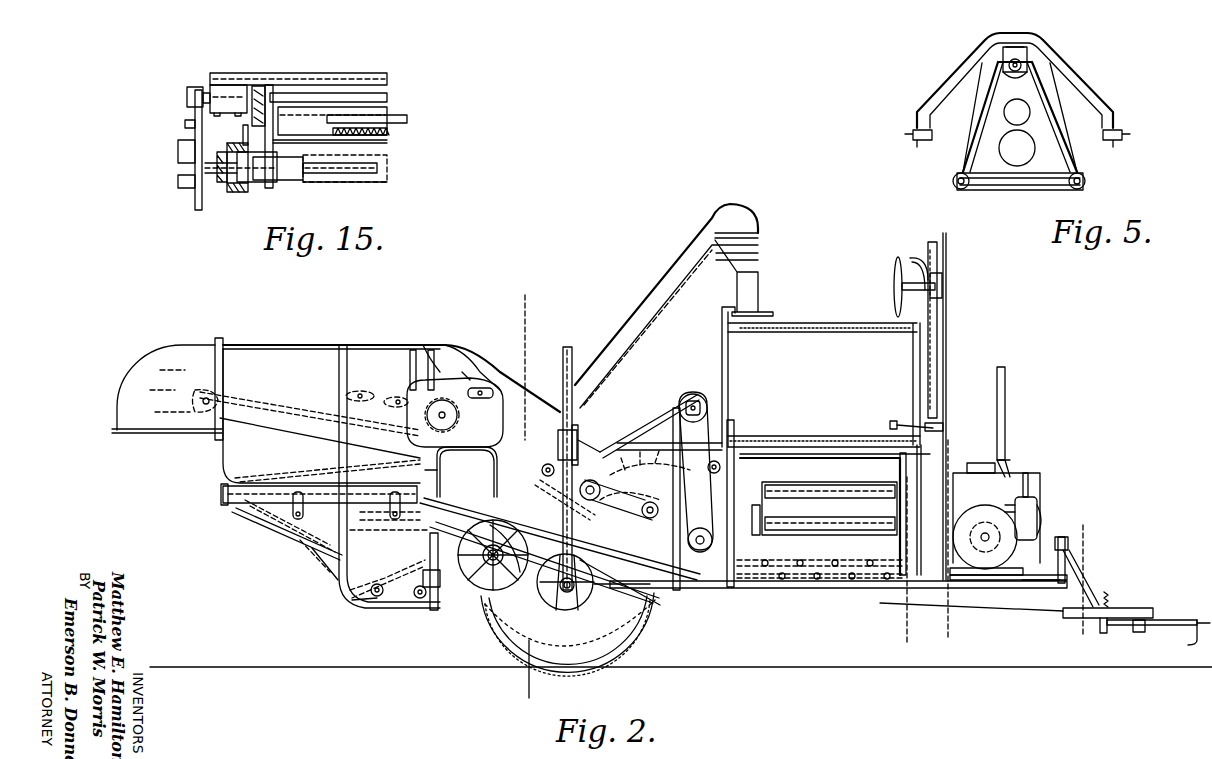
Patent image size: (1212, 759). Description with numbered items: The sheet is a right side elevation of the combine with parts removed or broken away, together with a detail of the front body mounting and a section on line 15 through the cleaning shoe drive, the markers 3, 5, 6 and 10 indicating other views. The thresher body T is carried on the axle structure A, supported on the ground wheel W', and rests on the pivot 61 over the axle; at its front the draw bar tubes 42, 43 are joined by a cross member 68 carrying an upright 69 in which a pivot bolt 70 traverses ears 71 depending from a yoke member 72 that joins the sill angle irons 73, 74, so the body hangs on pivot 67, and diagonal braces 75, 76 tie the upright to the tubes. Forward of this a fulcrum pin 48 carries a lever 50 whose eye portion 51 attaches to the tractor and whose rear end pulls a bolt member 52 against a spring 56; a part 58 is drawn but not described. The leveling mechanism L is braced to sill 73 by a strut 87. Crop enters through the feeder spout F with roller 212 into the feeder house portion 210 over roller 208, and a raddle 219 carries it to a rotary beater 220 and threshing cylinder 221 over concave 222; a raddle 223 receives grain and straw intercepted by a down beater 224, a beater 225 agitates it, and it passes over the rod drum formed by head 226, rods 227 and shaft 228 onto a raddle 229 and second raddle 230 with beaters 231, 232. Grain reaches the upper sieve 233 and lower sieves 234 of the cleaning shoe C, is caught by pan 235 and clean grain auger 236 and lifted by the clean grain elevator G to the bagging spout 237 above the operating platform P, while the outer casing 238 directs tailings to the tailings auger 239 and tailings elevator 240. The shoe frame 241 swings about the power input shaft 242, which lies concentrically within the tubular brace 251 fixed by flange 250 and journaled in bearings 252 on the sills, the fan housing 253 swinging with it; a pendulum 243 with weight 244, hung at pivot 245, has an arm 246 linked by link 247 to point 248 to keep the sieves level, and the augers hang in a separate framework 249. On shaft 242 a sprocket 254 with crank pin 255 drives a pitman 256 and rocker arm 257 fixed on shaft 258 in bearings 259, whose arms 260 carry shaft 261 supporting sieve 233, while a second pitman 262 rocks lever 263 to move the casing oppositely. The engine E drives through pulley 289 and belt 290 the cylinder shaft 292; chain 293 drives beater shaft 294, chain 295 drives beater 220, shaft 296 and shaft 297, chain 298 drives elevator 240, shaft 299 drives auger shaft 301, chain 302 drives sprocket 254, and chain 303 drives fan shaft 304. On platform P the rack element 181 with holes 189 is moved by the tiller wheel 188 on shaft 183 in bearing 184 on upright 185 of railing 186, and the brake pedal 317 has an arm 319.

In FIG. 15, the frame 241 is at (272, 98).
In FIG. 2, the frame 241 is at (223, 494).
In FIG. 15, the arms 260 is at (260, 86).
In FIG. 15, the bearings 259 is at (203, 88).
In FIG. 15, the rocker arm 257 is at (187, 110).
In FIG. 15, the second pitman 262 is at (185, 127).
In FIG. 2, the second pitman 262 is at (400, 516).
In FIG. 15, the pitman 256 is at (178, 158).
In FIG. 15, the crank pin 255 is at (178, 182).
In FIG. 15, the sprocket 254 is at (195, 198).
In FIG. 2, the sprocket 254 is at (420, 531).
In FIG. 15, the shaft 242 is at (388, 169).
In FIG. 2, the shaft 242 is at (467, 472).
In FIG. 15, the shaft 258 is at (388, 97).
In FIG. 15, the shaft 261 is at (402, 119).
In FIG. 15, the upper sieve 233 is at (360, 132).
In FIG. 2, the upper sieve 233 is at (252, 532).
In FIG. 15, the flange 250 is at (388, 141).
In FIG. 15, the tubular brace 251 is at (375, 183).
In FIG. 15, the bearings 252 is at (238, 192).
In FIG. 15, the fan housing 253 is at (226, 182).
In FIG. 2, the fan housing 253 is at (543, 604).
In FIG. 15, the angle iron 73 is at (244, 138).
In FIG. 5, the angle iron 73 is at (917, 141).
In FIG. 2, the angle iron 73 is at (1033, 581).
In FIG. 5, the yoke member 72 is at (946, 86).
In FIG. 5, the angle iron 74 is at (1114, 141).
In FIG. 5, the ears 71 is at (1004, 50).
In FIG. 5, the pivot bolt 70 is at (1009, 62).
In FIG. 2, the pivot bolt 70 is at (1070, 550).
In FIG. 5, the pivot 67 is at (1020, 64).
In FIG. 2, the pivot 67 is at (1062, 537).
In FIG. 5, the upright 69 is at (995, 133).
In FIG. 5, the diagonal brace 75 is at (1003, 124).
In FIG. 5, the diagonal brace 76 is at (1060, 148).
In FIG. 5, the cross member 68 is at (1035, 184).
In FIG. 5, the tubular draw bar element 43 is at (955, 184).
In FIG. 5, the tubular draw bar element 42 is at (1084, 180).
In FIG. 2, the second raddle 230 is at (130, 398).
In FIG. 2, the thresher body T is at (352, 342).
In FIG. 2, the raddle 229 is at (300, 400).
In FIG. 2, the beater 232 is at (362, 391).
In FIG. 2, the beater 231 is at (396, 397).
In FIG. 2, the framework 249 is at (345, 587).
In FIG. 2, the pivot 245 is at (442, 398).
In FIG. 2, the arm 246 is at (438, 398).
In FIG. 2, the link 247 is at (415, 385).
In FIG. 2, the head 226 is at (450, 398).
In FIG. 2, the rods 227 is at (458, 398).
In FIG. 2, the shaft 228 is at (466, 398).
In FIG. 2, the beater 225 is at (486, 388).
In FIG. 2, the section line 3- 3 is at (525, 687).
In FIG. 2, the leveling mechanism L is at (562, 362).
In FIG. 2, the clean grain elevator G is at (633, 304).
In FIG. 2, the bagging spout 237 is at (748, 304).
In FIG. 2, the operating platform P is at (818, 432).
In FIG. 2, the feeder house portion 210 is at (773, 462).
In FIG. 2, the feeder spout F is at (755, 494).
In FIG. 2, the roller 212 is at (828, 490).
In FIG. 2, the shaft 296 is at (755, 518).
In FIG. 2, the roller 208 is at (815, 553).
In FIG. 2, the raddle 219 is at (845, 562).
In FIG. 2, the rack element 181 is at (938, 365).
In FIG. 2, the section line 6- 6 is at (950, 637).
In FIG. 2, the upright 185 is at (917, 370).
In FIG. 2, the tiller wheel 188 is at (896, 278).
In FIG. 2, the holes 189 is at (935, 270).
In FIG. 2, the shaft 183 is at (913, 275).
In FIG. 2, the bearing 184 is at (920, 262).
In FIG. 2, the brake pedal 317 is at (893, 421).
In FIG. 2, the arm 319 is at (943, 427).
In FIG. 2, the belt 290 is at (945, 500).
In FIG. 2, the engine E is at (1015, 470).
In FIG. 2, the pulley 289 is at (981, 537).
In FIG. 2, the rod or bolt member 52 is at (1106, 598).
In FIG. 2, the spring 56 is at (1106, 606).
In FIG. 2, the lever 50 is at (1158, 620).
In FIG. 2, the fulcrum pin 48 is at (1140, 632).
In FIG. 2, the eye portion 51 is at (1187, 638).
In FIG. 2, the bracket 58 is at (1104, 633).
In FIG. 2, the section line 5- 5 is at (1085, 637).
In FIG. 2, the section line 10- 10 is at (907, 640).
In FIG. 2, the tailings elevator 240 is at (680, 403).
In FIG. 2, the chain 298 is at (708, 394).
In FIG. 2, the threshing cylinder 221 is at (665, 447).
In FIG. 2, the down beater 224 is at (618, 433).
In FIG. 2, the strut 87 is at (590, 424).
In FIG. 2, the railing 186 is at (546, 452).
In FIG. 2, the chain 302 is at (545, 476).
In FIG. 2, the chain 293 is at (616, 488).
In FIG. 2, the chain 295 is at (650, 463).
In FIG. 2, the rotary beater 220 is at (702, 465).
In FIG. 2, the shaft 294 is at (641, 510).
In FIG. 2, the shaft 292 is at (636, 500).
In FIG. 2, the shaft 297 is at (705, 553).
In FIG. 2, the point 248 is at (425, 470).
In FIG. 2, the lever 263 is at (425, 480).
In FIG. 2, the cleaning shoe C is at (283, 546).
In FIG. 2, the lower sieves 234 is at (255, 548).
In FIG. 2, the pan 235 is at (302, 562).
In FIG. 2, the outer casing 238 is at (325, 570).
In FIG. 2, the tailings auger 239 is at (352, 612).
In FIG. 2, the shaft 299 is at (372, 614).
In FIG. 2, the clean grain auger 236 is at (395, 614).
In FIG. 2, the shaft 301 is at (425, 617).
In FIG. 2, the pendulum 243 is at (456, 592).
In FIG. 2, the weight 244 is at (466, 615).
In FIG. 2, the chain 303 is at (486, 572).
In FIG. 2, the section line 15— 15 is at (490, 558).
In FIG. 2, the shaft 304 is at (518, 548).
In FIG. 2, the wheel W' is at (551, 634).
In FIG. 2, the pivot 61 is at (655, 637).
In FIG. 2, the axle structure A is at (620, 645).
In FIG. 2, the concave 222 is at (660, 600).
In FIG. 2, the rake or raddle 223 is at (650, 612).